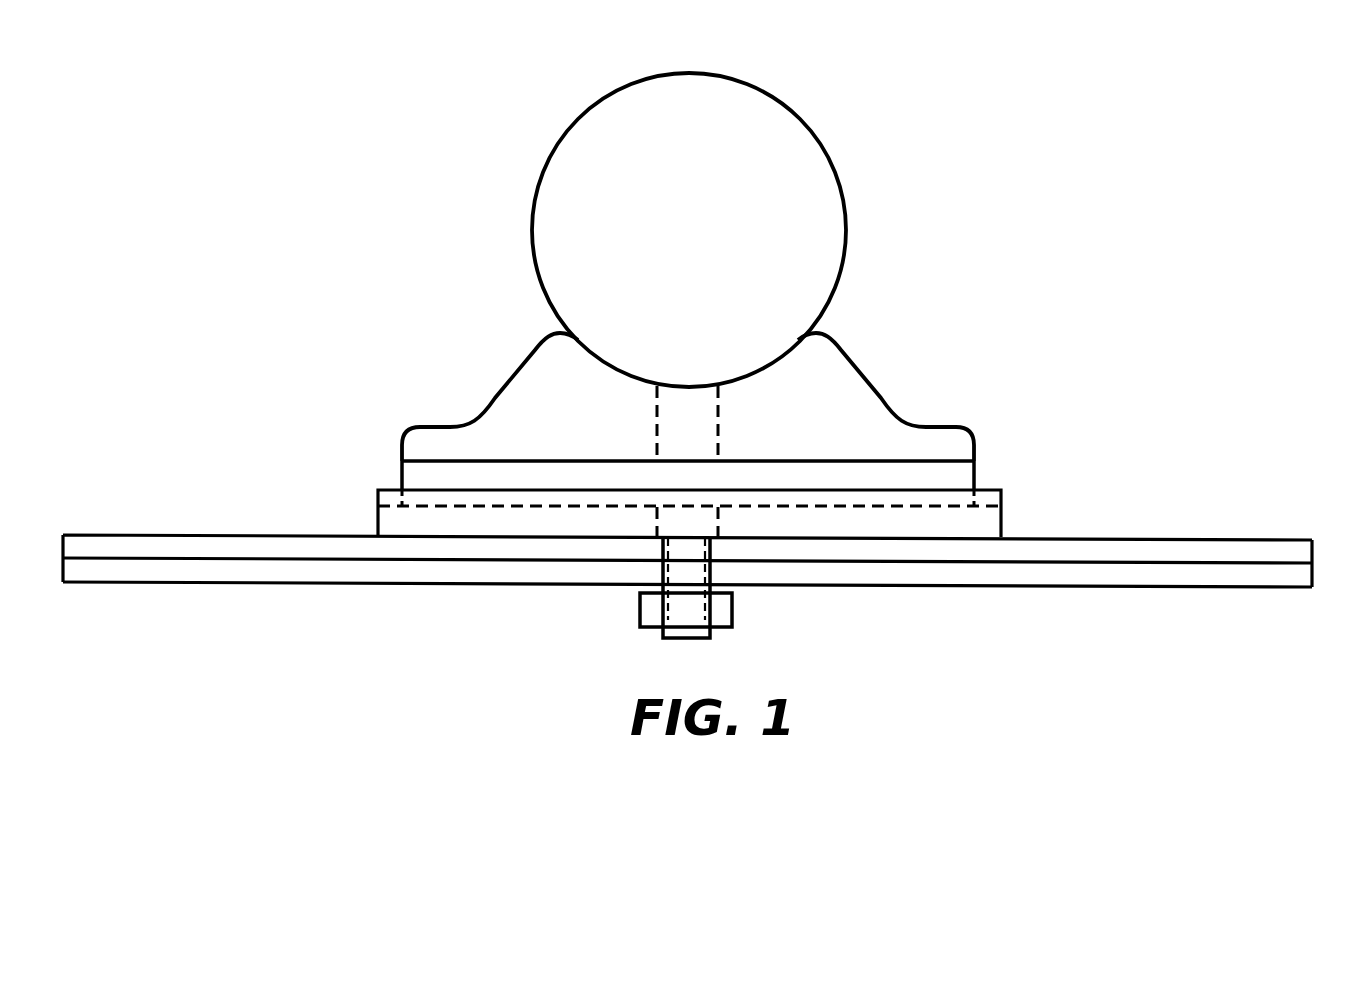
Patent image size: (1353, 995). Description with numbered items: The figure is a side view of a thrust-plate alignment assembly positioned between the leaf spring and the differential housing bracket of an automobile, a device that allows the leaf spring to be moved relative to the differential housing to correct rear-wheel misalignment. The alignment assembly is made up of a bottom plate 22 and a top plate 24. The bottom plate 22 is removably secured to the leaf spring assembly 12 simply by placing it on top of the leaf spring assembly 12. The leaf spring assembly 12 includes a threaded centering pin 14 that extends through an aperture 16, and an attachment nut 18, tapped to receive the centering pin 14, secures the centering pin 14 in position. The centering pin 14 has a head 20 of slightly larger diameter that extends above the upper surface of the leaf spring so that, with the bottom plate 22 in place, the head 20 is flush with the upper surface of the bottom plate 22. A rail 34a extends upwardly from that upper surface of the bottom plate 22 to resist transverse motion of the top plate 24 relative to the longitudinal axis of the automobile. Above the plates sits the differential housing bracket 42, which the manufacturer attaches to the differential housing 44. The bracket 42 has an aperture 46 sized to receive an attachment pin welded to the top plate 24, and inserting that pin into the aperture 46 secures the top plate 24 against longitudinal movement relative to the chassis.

The leaf spring 12 is at (1175, 537).
The centering pin 14 is at (612, 573).
The aperture 16 is at (713, 552).
The attachment nut 18 is at (732, 608).
The head 20 is at (663, 512).
The bottom plate 22 is at (1002, 517).
The top plate 24 is at (978, 470).
The rail 34a is at (388, 498).
The differential housing bracket 42 is at (883, 392).
The differential housing 44 is at (838, 170).
The aperture 46 is at (720, 388).